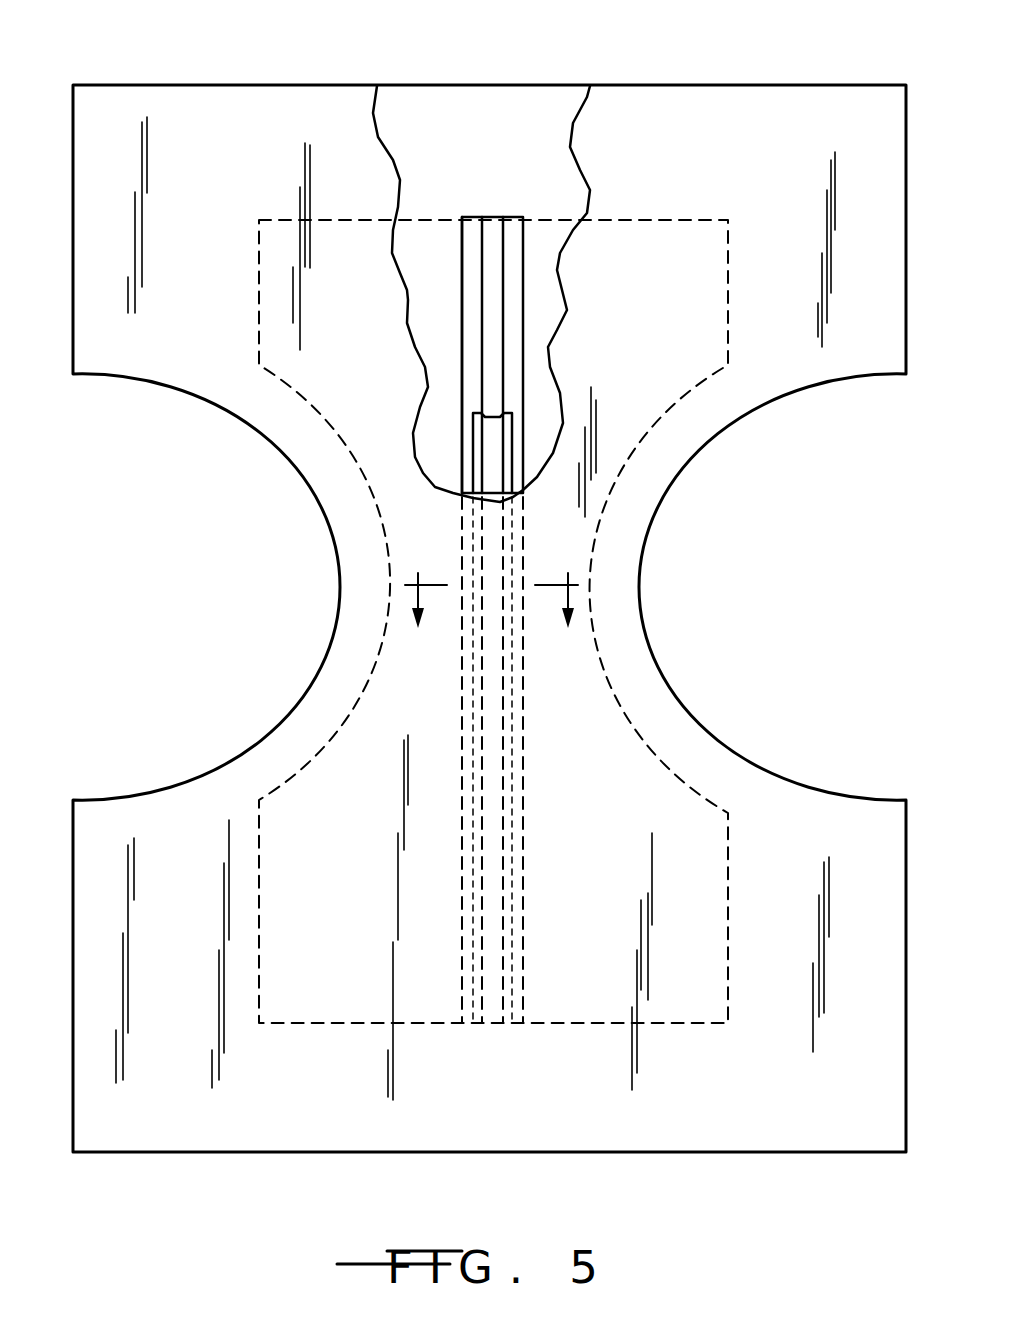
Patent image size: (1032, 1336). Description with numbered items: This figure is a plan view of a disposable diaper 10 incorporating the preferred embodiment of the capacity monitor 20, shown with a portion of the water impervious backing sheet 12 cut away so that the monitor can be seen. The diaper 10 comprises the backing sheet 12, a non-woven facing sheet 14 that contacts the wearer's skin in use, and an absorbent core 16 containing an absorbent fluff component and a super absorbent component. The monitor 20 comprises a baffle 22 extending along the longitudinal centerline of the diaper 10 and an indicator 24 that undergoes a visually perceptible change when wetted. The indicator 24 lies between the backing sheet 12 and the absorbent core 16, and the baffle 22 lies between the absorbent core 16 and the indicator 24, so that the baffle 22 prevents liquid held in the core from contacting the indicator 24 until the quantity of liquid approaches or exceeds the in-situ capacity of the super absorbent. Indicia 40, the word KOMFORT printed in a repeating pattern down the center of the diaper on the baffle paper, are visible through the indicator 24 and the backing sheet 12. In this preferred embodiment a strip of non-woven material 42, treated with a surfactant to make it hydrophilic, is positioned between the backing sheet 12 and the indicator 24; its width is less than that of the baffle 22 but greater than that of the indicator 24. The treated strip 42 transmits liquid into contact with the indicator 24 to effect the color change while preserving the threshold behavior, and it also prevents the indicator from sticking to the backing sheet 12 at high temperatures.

The disposable diaper 10 is at (525, 74).
The water impervious backing sheet 12 is at (175, 108).
The non-woven facing sheet 14 is at (539, 213).
The absorbent core 16 is at (424, 244).
The capacity monitor 20 is at (492, 203).
The baffle 22 is at (465, 365).
The indicator 24 is at (505, 240).
The indicia 40 is at (500, 375).
The strip of non-woven material 42 is at (473, 457).